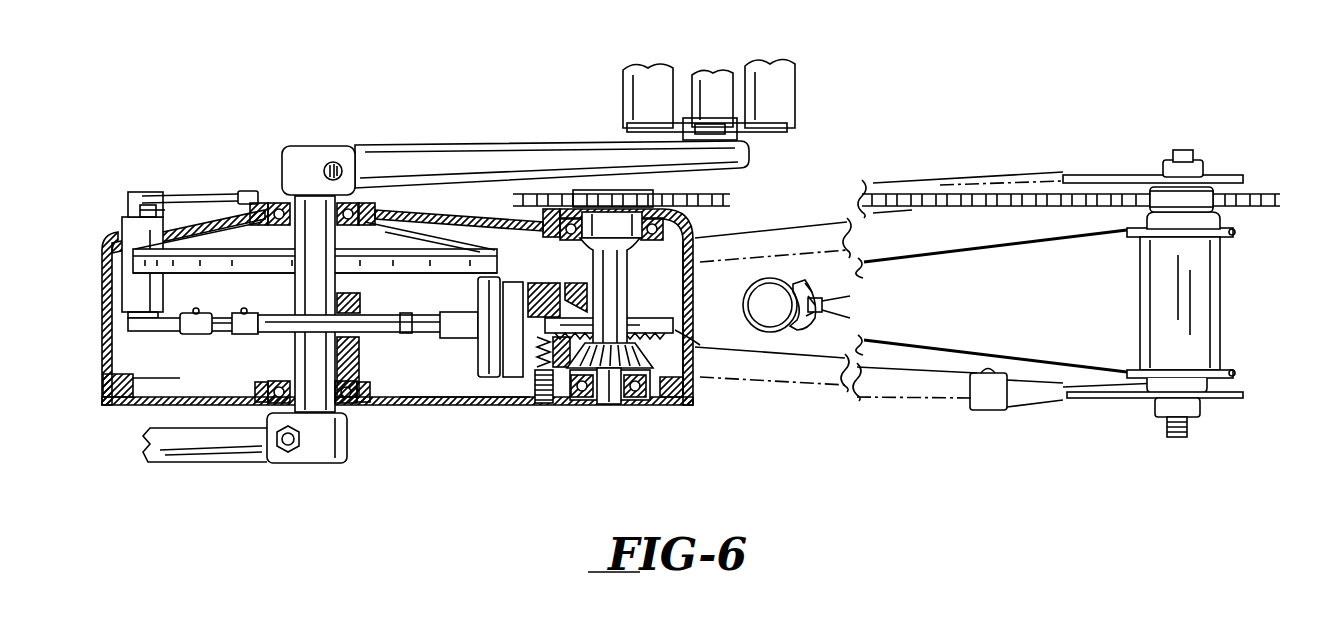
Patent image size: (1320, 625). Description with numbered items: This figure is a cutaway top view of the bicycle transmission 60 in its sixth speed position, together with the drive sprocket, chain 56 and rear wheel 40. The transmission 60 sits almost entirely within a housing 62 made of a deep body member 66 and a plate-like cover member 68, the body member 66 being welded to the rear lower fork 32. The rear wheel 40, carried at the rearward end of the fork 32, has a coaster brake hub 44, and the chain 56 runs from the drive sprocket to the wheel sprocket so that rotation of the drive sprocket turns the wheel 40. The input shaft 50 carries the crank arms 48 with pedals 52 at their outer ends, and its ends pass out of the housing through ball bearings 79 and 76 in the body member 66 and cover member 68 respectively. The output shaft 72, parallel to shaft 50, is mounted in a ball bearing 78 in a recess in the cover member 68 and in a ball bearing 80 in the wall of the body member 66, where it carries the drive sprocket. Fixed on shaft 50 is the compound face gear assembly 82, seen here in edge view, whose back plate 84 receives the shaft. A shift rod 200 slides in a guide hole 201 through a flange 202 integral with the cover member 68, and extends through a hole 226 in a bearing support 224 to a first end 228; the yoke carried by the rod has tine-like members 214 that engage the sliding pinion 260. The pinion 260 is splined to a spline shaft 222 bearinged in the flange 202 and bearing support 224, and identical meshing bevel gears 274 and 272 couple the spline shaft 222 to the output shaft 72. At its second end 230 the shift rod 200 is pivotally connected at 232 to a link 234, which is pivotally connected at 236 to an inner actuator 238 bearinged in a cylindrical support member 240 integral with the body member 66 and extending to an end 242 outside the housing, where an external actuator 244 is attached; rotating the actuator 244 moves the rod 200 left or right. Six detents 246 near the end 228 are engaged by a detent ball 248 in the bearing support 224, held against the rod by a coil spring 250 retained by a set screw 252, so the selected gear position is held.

The rear lower fork 32 is at (741, 238).
The rear wheel 40 is at (797, 291).
The coaster brake hub 44 is at (1156, 300).
The crank arms 48 is at (545, 160).
The horizontal shaft 50 is at (348, 420).
The pedals 52 is at (785, 87).
The chain 56 is at (900, 190).
The transmission 60 is at (419, 315).
The housing 62 is at (441, 203).
The deep body member 66 is at (690, 282).
The cover member 68 is at (418, 406).
The output shaft 72 is at (611, 226).
The ball bearing 76 is at (304, 452).
The ball bearing 78 is at (588, 402).
The ball bearing 79 is at (287, 224).
The ball bearing 80 is at (648, 240).
The compound face gear assembly 82 is at (236, 285).
The back plate 84 is at (180, 262).
The shift rod 200 is at (270, 318).
The guide hole 201 is at (361, 316).
The flange 202 is at (357, 356).
The tine-like members 214 is at (510, 285).
The spline shaft 222 is at (435, 339).
The bearing support 224 is at (541, 283).
The hole 226 is at (487, 323).
The first end 228 is at (700, 342).
The second end 230 is at (216, 334).
The pivotal connection 232 is at (245, 337).
The link 234 is at (204, 444).
The pivotal connection 236 is at (199, 335).
The inner actuator 238 is at (101, 405).
The cylindrical support member 240 is at (103, 242).
The end 242 is at (150, 192).
The external actuator 244 is at (213, 195).
The detents 246 is at (641, 375).
The detent ball 248 is at (578, 303).
The coil spring 250 is at (527, 377).
The set screw 252 is at (543, 406).
The sliding pinion 260 is at (470, 395).
The bevel gear 272 is at (612, 406).
The bevel gear 274 is at (588, 302).